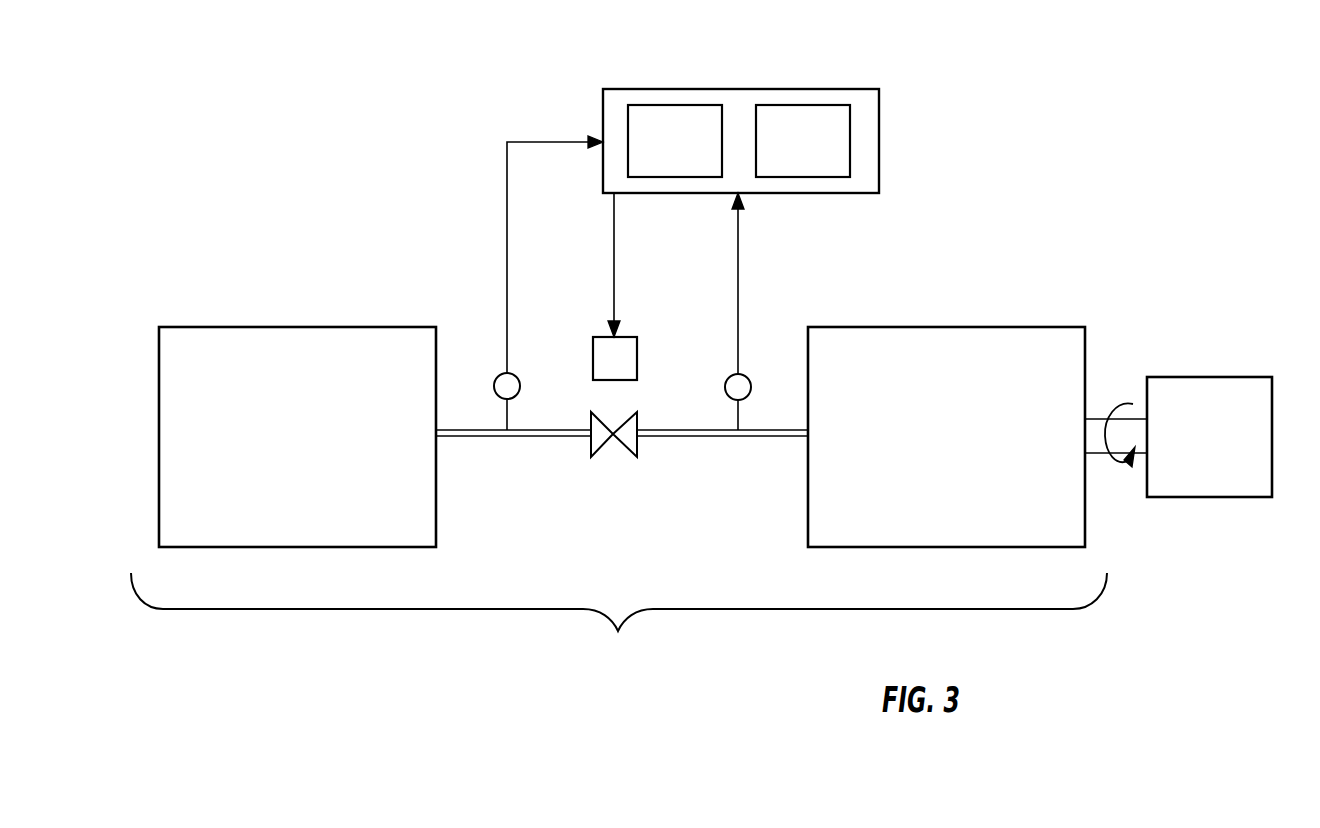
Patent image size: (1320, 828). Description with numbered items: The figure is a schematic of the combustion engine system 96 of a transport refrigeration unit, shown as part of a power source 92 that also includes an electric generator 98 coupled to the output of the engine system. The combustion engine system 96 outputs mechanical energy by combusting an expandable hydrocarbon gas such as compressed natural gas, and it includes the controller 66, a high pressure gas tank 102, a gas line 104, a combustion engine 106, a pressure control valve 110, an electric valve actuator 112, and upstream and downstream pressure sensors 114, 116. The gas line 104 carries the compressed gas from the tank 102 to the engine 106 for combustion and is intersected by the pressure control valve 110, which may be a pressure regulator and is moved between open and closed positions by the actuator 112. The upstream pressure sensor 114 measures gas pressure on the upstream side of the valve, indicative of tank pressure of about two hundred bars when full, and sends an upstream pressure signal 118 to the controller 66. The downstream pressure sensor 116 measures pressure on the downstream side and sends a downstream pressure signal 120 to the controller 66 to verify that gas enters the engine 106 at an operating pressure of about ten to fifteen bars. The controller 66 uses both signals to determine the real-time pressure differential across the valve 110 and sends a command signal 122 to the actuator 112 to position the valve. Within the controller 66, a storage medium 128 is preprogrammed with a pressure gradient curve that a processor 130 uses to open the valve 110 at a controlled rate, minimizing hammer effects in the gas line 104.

The power source 92 is at (1046, 119).
The controller 66 is at (773, 89).
The computer readable and writeable storage medium 128 is at (695, 152).
The processor 130 is at (823, 152).
The high pressure gas tank 102 is at (317, 445).
The combustion engine 106 is at (966, 445).
The electric generator 98 is at (1222, 447).
The gas line 104 is at (526, 437).
The pressure control valve 110 is at (627, 451).
The electric valve actuator 112 is at (637, 359).
The upstream pressure sensor 114 is at (520, 386).
The downstream pressure sensor 116 is at (751, 387).
The upstream pressure signal 118 is at (507, 273).
The downstream pressure signal 120 is at (738, 273).
The command signal 122 is at (614, 273).
The combustion engine system 96 is at (619, 622).